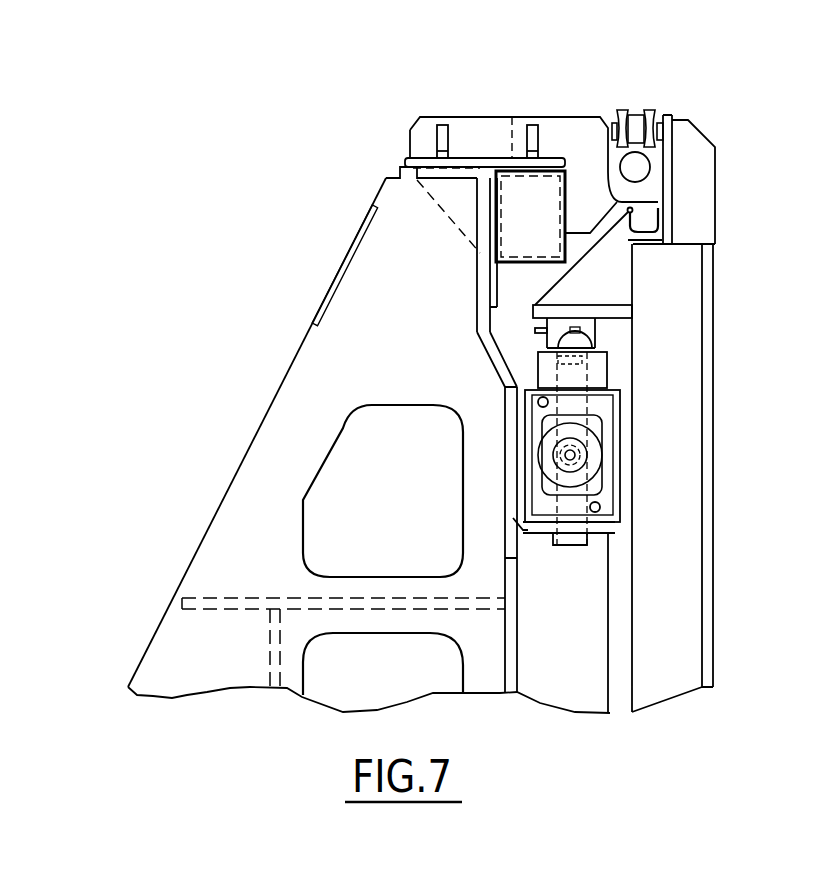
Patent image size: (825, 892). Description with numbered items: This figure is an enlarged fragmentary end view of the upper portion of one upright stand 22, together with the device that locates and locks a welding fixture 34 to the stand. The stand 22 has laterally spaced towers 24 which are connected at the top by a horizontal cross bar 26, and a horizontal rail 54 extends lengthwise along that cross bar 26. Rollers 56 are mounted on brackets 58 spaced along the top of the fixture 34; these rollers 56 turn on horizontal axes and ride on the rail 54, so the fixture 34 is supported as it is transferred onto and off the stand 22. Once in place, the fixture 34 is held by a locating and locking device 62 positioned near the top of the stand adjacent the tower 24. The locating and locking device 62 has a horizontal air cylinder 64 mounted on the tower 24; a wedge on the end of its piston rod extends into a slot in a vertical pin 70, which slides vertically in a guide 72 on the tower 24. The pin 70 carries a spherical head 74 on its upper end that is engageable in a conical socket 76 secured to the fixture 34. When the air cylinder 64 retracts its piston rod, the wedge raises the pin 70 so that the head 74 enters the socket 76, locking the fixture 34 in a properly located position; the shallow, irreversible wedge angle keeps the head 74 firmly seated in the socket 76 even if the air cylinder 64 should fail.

The upright stand 22 is at (253, 358).
The tower 24 is at (263, 452).
The horizontal cross bar 26 is at (541, 204).
The fixture 34 is at (688, 360).
The horizontal rail 54 is at (640, 165).
The roller 56 is at (641, 119).
The bracket 58 is at (698, 205).
The locating and locking device 62 is at (630, 451).
The air cylinder 64 is at (593, 477).
The vertical pin 70 is at (540, 372).
The guide 72 is at (594, 388).
The spherical head 74 is at (569, 340).
The conical socket 76 is at (596, 332).